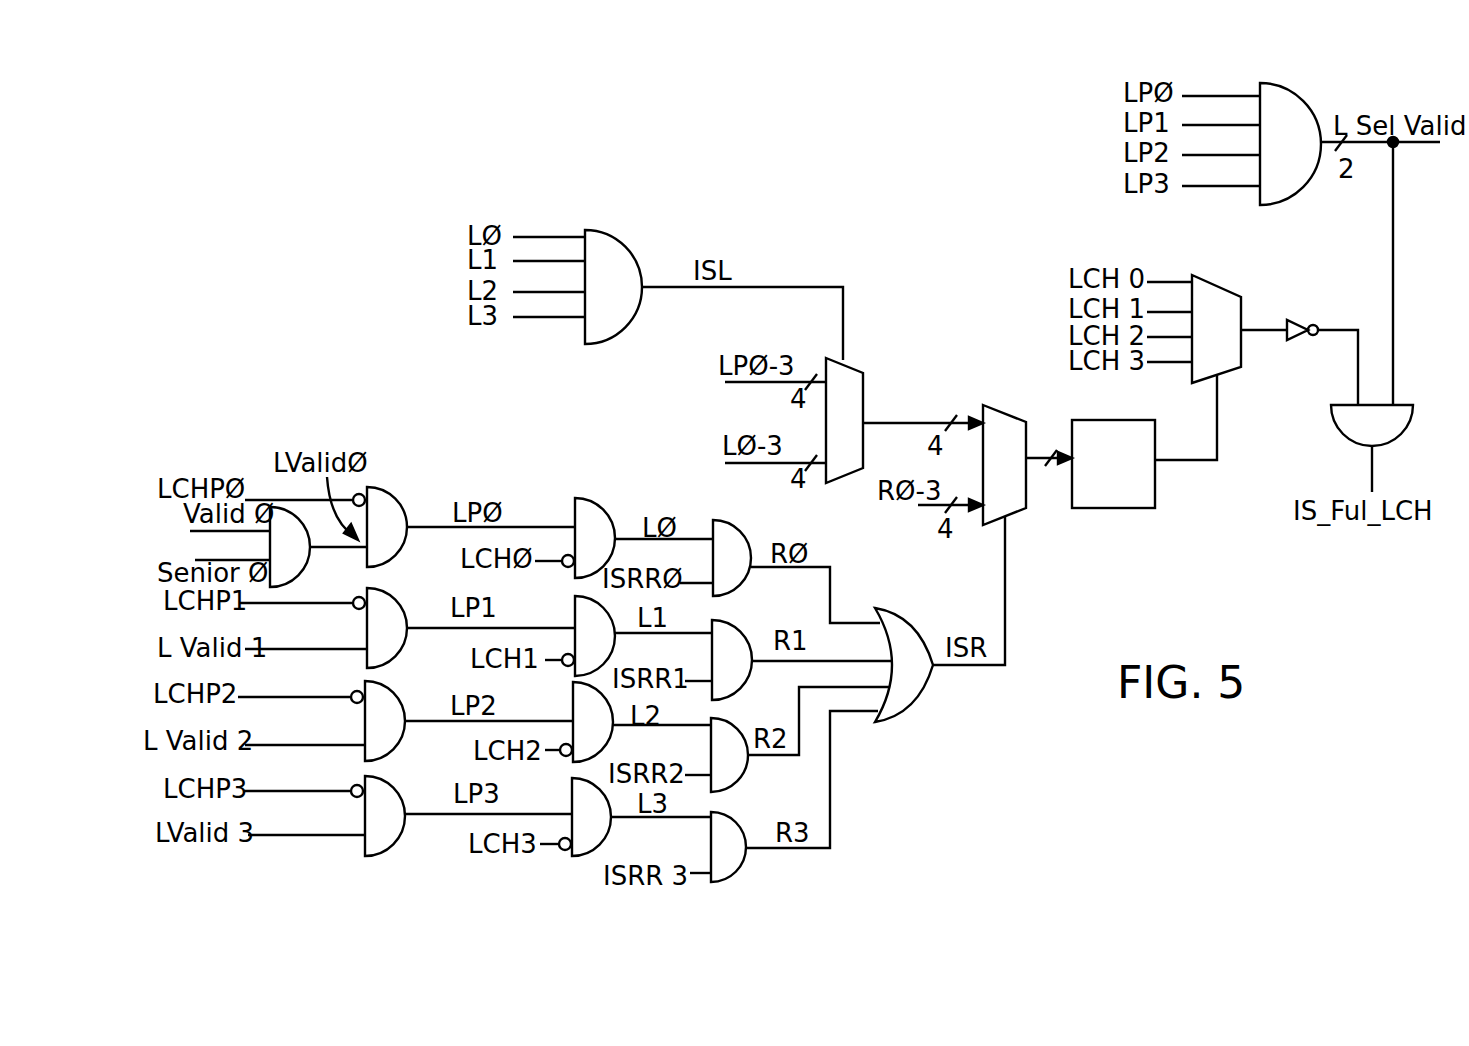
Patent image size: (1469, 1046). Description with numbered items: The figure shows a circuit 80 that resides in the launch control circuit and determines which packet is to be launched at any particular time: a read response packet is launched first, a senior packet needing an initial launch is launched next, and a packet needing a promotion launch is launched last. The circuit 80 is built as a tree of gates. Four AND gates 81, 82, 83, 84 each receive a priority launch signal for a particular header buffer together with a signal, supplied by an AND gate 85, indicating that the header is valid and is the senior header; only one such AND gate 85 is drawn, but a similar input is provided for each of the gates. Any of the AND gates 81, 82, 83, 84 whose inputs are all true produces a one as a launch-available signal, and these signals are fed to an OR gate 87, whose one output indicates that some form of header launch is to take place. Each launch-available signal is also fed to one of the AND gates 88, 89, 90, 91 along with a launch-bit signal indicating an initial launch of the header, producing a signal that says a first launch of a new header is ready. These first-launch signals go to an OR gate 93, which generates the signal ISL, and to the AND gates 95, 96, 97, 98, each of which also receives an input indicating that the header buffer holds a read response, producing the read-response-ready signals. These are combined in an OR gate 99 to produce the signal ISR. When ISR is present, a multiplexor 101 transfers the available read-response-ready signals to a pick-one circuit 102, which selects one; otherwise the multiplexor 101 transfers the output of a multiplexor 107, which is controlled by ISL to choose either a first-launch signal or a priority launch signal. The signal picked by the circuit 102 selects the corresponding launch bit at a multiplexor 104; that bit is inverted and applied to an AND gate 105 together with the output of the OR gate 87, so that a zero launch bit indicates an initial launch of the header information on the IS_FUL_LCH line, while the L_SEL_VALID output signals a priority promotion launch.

The circuit 80 is at (900, 219).
The AND gate 81 is at (410, 527).
The AND gate 82 is at (407, 628).
The AND gate 83 is at (405, 721).
The AND gate 84 is at (407, 816).
The AND gate 85 is at (278, 547).
The OR gate 87 is at (1311, 244).
The AND gate 88 is at (624, 538).
The AND gate 89 is at (628, 636).
The AND gate 90 is at (628, 722).
The AND gate 91 is at (625, 817).
The OR gate 93 is at (678, 295).
The AND gate 95 is at (780, 571).
The AND gate 96 is at (788, 660).
The AND gate 97 is at (787, 739).
The AND gate 98 is at (784, 796).
The OR gate 99 is at (940, 619).
The multiplexor 101 is at (1003, 418).
The circuit 102 is at (1144, 441).
The multiplexor 104 is at (1252, 340).
The AND gate 105 is at (1372, 448).
The multiplexor 107 is at (853, 413).